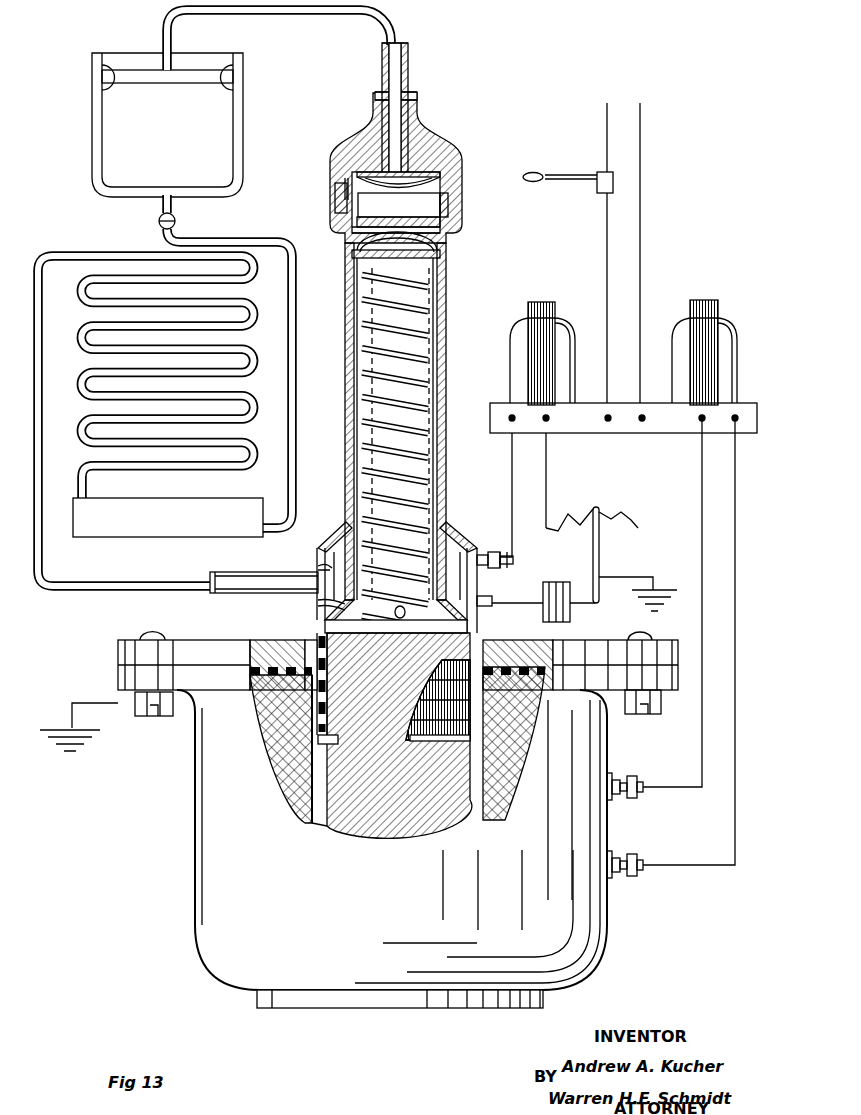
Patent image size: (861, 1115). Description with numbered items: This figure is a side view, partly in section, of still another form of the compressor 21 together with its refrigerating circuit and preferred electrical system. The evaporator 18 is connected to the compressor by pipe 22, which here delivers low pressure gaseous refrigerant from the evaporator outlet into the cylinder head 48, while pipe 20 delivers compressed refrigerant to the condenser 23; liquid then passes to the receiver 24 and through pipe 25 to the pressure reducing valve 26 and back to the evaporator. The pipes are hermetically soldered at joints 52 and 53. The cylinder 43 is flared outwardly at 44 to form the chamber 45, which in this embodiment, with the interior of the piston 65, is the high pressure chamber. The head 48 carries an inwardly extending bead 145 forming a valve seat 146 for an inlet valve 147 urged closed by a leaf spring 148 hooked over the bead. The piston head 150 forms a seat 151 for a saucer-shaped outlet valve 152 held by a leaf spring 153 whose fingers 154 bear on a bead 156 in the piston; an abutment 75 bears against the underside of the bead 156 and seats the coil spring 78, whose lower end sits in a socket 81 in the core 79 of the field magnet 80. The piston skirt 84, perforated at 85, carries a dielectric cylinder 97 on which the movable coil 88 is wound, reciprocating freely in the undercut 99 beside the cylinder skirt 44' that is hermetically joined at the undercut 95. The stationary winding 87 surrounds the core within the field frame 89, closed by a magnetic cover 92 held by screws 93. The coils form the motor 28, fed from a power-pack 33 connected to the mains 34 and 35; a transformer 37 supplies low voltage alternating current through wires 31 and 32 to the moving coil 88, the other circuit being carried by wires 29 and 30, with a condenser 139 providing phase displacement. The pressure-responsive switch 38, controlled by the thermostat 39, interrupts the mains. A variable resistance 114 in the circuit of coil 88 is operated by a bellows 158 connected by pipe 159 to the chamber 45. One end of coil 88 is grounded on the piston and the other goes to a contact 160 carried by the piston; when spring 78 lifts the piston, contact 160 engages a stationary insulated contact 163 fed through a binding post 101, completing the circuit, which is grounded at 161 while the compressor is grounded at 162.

The evaporator 18 is at (242, 92).
The pipe 20 is at (212, 590).
The compressor 21 is at (345, 352).
The pipe 22 is at (410, 65).
The condenser 23 is at (248, 370).
The liquid refrigerant receiver 24 is at (190, 510).
The pipe 25 is at (297, 470).
The pressure reducing valve 26 is at (158, 224).
The conductor motor 28 is at (408, 1047).
The wire 29 is at (755, 520).
The wire 30 is at (702, 518).
The wire 31 is at (512, 470).
The wire 32 is at (560, 476).
The power-pack 33 is at (648, 434).
The alternating current main 34 is at (607, 229).
The alternating current main 35 is at (640, 238).
The transformer 37 is at (541, 302).
The automatic switch 38 is at (600, 172).
The thermostat 39 is at (528, 173).
The cylinder 43 is at (446, 395).
The flared portion 44 is at (427, 434).
The skirt 44' is at (269, 749).
The chamber 45 is at (318, 560).
The cylinder head 48 is at (428, 136).
The joint 52 is at (318, 570).
The joint 53 is at (420, 95).
The piston 65 is at (338, 538).
The abutment 75 is at (448, 251).
The coil spring 78 is at (432, 338).
The core 79 is at (318, 640).
The field magnet 80 is at (262, 698).
The socket 81 is at (332, 692).
The skirt 84 is at (470, 631).
The perforation 85 is at (320, 604).
The stationary winding 87 is at (540, 716).
The movable coil 88 is at (412, 692).
The field frame 89 is at (226, 980).
The cover 92 is at (122, 654).
The screws 93 is at (136, 720).
The undercut 95 is at (312, 796).
The dielectric cylinder 97 is at (414, 736).
The undercut 99 is at (326, 742).
The binding post 101 is at (534, 552).
The variable resistance 114 is at (626, 480).
The condenser 139 is at (708, 302).
The bead 145 is at (440, 178).
The valve seat 146 is at (352, 190).
The inlet valve 147 is at (335, 206).
The leaf spring 148 is at (356, 176).
The piston head 150 is at (448, 213).
The valve seat 151 is at (448, 222).
The outlet valve 152 is at (340, 232).
The leaf spring 153 is at (448, 270).
The fingers 154 is at (348, 241).
The bead 156 is at (362, 250).
The bellows 158 is at (570, 612).
The pipe 159 is at (500, 594).
The contact 160 is at (505, 594).
The ground 161 is at (653, 586).
The ground 162 is at (70, 703).
The stationary contact 163 is at (478, 548).